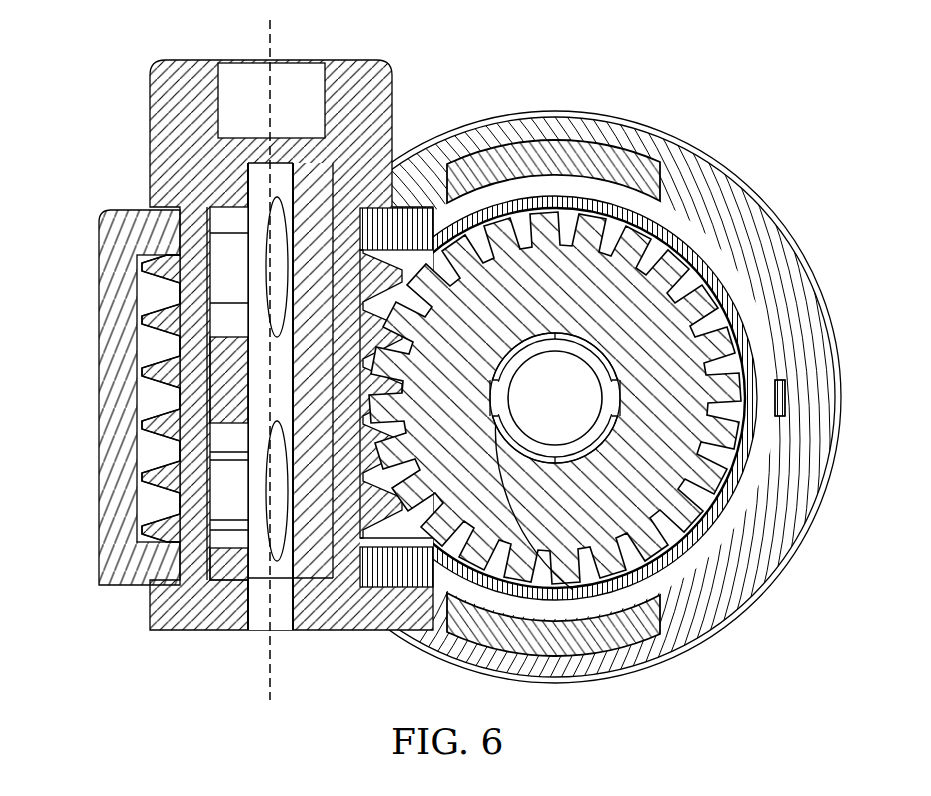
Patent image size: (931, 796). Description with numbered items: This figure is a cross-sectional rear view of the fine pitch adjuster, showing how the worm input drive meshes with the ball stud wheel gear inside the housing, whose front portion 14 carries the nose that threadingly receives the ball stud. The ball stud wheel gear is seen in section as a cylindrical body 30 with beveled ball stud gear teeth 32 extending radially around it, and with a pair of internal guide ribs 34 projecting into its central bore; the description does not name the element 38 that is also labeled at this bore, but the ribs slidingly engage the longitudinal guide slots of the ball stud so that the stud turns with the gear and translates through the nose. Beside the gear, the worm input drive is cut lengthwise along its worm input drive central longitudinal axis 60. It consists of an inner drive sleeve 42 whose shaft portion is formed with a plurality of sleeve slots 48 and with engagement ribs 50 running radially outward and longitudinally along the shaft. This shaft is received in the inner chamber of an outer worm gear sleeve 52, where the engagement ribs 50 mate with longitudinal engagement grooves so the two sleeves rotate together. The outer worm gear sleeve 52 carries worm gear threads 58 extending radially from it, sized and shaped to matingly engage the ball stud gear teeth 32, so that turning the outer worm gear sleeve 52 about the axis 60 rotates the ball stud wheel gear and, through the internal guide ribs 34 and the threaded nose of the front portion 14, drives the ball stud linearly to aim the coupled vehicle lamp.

The front portion 14 is at (110, 450).
The cylindrical body 30 is at (715, 500).
The ball stud gear teeth 32 is at (645, 247).
The internal guide ribs 34 is at (563, 590).
The hub 38 is at (607, 390).
The inner drive sleeve 42 is at (320, 200).
The sleeve slots 48 is at (230, 250).
The engagement ribs 50 is at (268, 537).
The outer worm gear sleeve 52 is at (165, 302).
The worm gear threads 58 is at (150, 362).
The worm input drive central longitudinal axis 60 is at (266, 648).